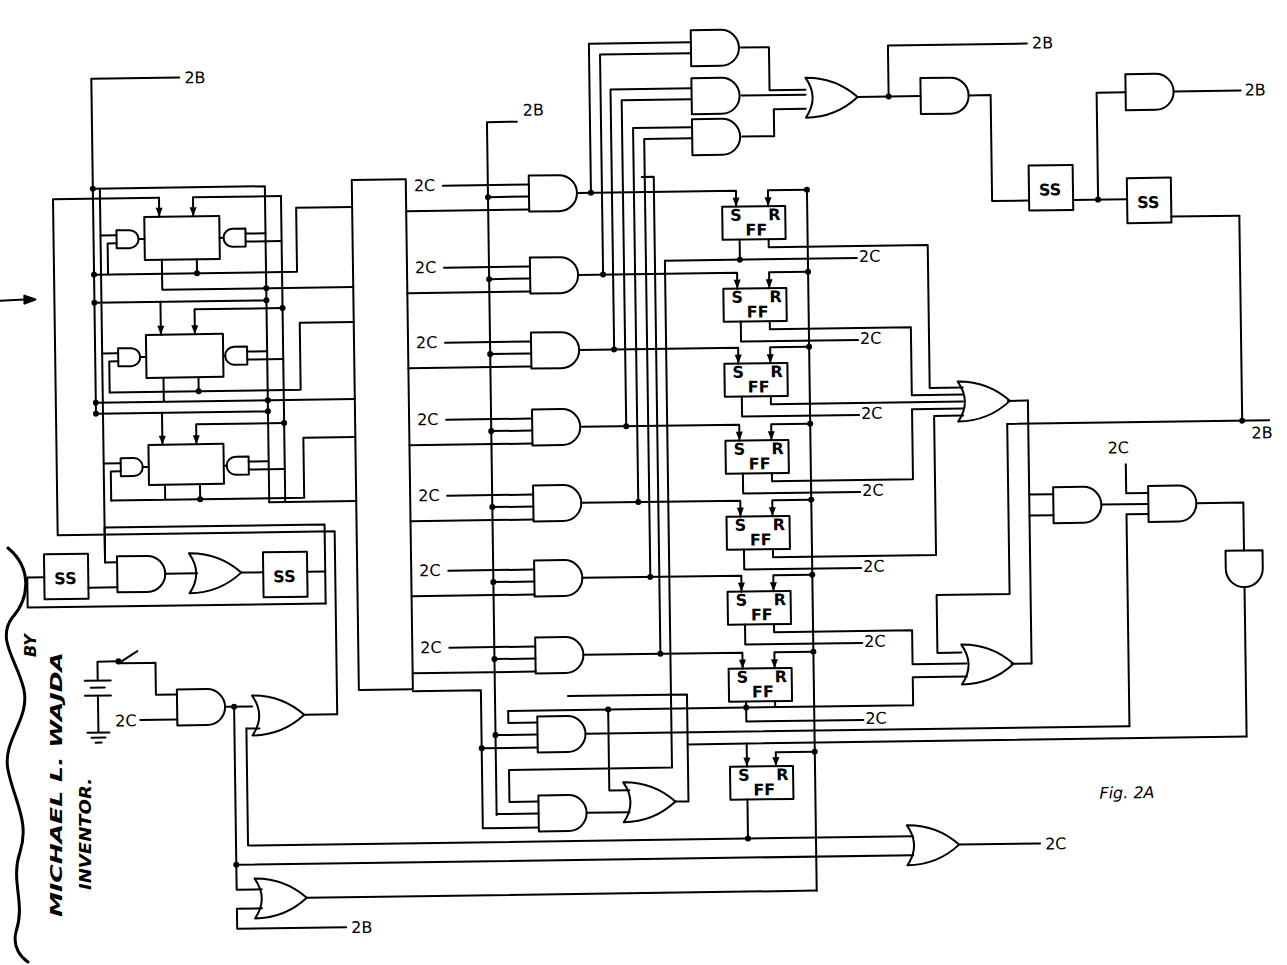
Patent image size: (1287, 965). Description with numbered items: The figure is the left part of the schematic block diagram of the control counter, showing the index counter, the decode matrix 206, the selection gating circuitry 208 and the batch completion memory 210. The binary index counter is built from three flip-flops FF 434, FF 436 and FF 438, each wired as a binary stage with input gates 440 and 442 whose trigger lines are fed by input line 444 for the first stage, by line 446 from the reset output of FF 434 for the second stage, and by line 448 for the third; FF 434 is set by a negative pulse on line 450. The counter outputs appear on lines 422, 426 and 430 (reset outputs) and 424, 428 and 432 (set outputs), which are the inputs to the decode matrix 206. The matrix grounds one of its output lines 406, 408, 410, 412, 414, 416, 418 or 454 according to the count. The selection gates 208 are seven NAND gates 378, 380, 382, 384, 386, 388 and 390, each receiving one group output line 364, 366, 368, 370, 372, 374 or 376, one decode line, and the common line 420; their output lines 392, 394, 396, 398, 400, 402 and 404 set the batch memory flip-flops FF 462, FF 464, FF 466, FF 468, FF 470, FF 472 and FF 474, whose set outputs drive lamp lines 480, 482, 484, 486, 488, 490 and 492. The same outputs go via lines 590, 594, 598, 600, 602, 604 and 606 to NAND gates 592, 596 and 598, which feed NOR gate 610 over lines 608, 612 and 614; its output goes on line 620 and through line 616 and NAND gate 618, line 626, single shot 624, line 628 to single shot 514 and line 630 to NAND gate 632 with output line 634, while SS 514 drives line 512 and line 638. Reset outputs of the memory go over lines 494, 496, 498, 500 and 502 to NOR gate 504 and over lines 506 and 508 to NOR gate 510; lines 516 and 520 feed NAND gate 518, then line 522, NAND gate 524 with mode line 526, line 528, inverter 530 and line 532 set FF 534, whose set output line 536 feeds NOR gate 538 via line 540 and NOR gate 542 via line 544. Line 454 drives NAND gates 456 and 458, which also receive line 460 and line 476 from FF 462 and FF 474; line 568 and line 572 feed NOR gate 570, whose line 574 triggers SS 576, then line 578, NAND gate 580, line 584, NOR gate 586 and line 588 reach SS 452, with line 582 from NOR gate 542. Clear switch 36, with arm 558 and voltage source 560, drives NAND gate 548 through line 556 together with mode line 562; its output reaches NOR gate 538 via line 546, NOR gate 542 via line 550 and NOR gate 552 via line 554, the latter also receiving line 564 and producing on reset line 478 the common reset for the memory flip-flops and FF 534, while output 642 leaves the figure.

The decode matrix 206 is at (370, 688).
The line 420 is at (492, 118).
The group 7 output line 376 is at (472, 183).
The group 6 output line 374 is at (472, 265).
The group 5 output line 372 is at (472, 340).
The group 4 output line 370 is at (472, 417).
The group 3 output line 368 is at (472, 493).
The group 2 output line 366 is at (472, 568).
The group 1 output line 364 is at (470, 645).
The decode matrix output line 418 is at (427, 208).
The decode matrix output line 416 is at (427, 290).
The decode matrix output line 414 is at (427, 365).
The decode matrix output line 412 is at (427, 442).
The decode matrix output line 410 is at (427, 518).
The decode matrix output line 408 is at (427, 593).
The decode matrix output line 406 is at (446, 670).
The NAND gate 390 is at (542, 212).
The NAND gate 388 is at (542, 292).
The NAND gate 386 is at (546, 368).
The NAND gate 384 is at (554, 444).
The NAND gate 382 is at (554, 522).
The NAND gate 380 is at (574, 572).
The NAND gate 378 is at (572, 646).
The output line 404 is at (582, 210).
The output line 402 is at (592, 290).
The output line 400 is at (597, 354).
The output line 398 is at (603, 430).
The output line 396 is at (611, 508).
The output line 394 is at (611, 582).
The output line 392 is at (593, 660).
The gating circuitry 208 is at (570, 214).
The batch completion memory 210 is at (757, 201).
The line 604 is at (614, 44).
The line 606 is at (672, 44).
The line 600 is at (652, 206).
The line 602 is at (658, 247).
The line 590 is at (656, 148).
The line 594 is at (668, 412).
The NAND gate 598 is at (748, 48).
The NAND gate 596 is at (760, 76).
The NAND gate 592 is at (738, 148).
The line 614 is at (775, 49).
The line 612 is at (777, 77).
The line 608 is at (778, 114).
The NOR gate 610 is at (833, 80).
The line 616 is at (874, 100).
The line 620 is at (968, 49).
The NAND gate 618 is at (966, 88).
The line 626 is at (996, 124).
The single shot multivibrator 624 is at (1056, 171).
The line 628 is at (1086, 208).
The line 630 is at (1102, 136).
The NAND gate 632 is at (1159, 82).
The line 634 is at (1212, 100).
The single shot multivibrator 514 is at (1153, 230).
The line 512 is at (1242, 294).
The line 638 is at (1252, 425).
The flip-flop 474 is at (726, 224).
The flip-flop 472 is at (726, 305).
The flip-flop 470 is at (726, 380).
The flip-flop 468 is at (726, 457).
The flip-flop 466 is at (726, 533).
The flip-flop 464 is at (726, 608).
The flip-flop 462 is at (726, 681).
The line 478 is at (811, 797).
The line 492 is at (830, 268).
The line 490 is at (834, 336).
The line 488 is at (836, 412).
The line 486 is at (834, 489).
The line 484 is at (836, 565).
The line 482 is at (840, 640).
The line 480 is at (830, 718).
The line 502 is at (940, 294).
The line 500 is at (882, 330).
The line 498 is at (878, 406).
The line 496 is at (876, 482).
The line 494 is at (896, 555).
The NOR gate 504 is at (990, 384).
The line 508 is at (878, 635).
The line 506 is at (938, 704).
The NOR gate 510 is at (991, 680).
The line 516 is at (1030, 446).
The line 520 is at (1030, 606).
The NAND gate 518 is at (1079, 522).
The line 522 is at (1106, 492).
The line 526 is at (1127, 478).
The NAND gate 524 is at (1171, 522).
The line 528 is at (1230, 500).
The NAND gate 530 is at (1226, 586).
The line 532 is at (1230, 614).
The line 574 is at (690, 762).
The decode matrix output line 454 is at (476, 760).
The NAND gate 456 is at (592, 742).
The NAND gate 458 is at (552, 796).
The line 568 is at (605, 720).
The line 476 is at (666, 756).
The NOR gate 570 is at (650, 822).
The line 572 is at (612, 814).
The line 460 is at (565, 695).
The flip-flop 534 is at (750, 815).
The set output line 536 is at (750, 832).
The line 540 is at (876, 836).
The NOR gate 538 is at (926, 832).
The line 642 is at (996, 858).
The line 544 is at (579, 782).
The line 546 is at (602, 864).
The line 554 is at (228, 858).
The NOR gate 552 is at (303, 884).
The line 564 is at (230, 906).
The input line 444 is at (107, 112).
The line 450 is at (57, 402).
The line 446 is at (97, 283).
The line 448 is at (132, 406).
The flip-flop 434 is at (148, 212).
The flip-flop 436 is at (178, 328).
The flip-flop 438 is at (178, 439).
The input gate 440 is at (134, 244).
The input gate 442 is at (232, 220).
The input line 422 is at (308, 212).
The input line 424 is at (258, 283).
The input line 426 is at (308, 314).
The input line 428 is at (224, 390).
The input line 430 is at (312, 436).
The input line 432 is at (324, 495).
The line 582 is at (94, 526).
The single shot multivibrator 576 is at (48, 553).
The NAND gate 580 is at (138, 549).
The line 578 is at (112, 598).
The NOR gate 586 is at (208, 549).
The line 584 is at (180, 572).
The output line 588 is at (246, 572).
The single shot multivibrator 452 is at (266, 548).
The clear switch 36 is at (111, 634).
The arm 558 is at (134, 640).
The D.C. voltage source 560 is at (92, 662).
The line 556 is at (154, 655).
The NAND gate 548 is at (200, 684).
The line 562 is at (159, 714).
The line 550 is at (242, 692).
The NOR gate 542 is at (272, 732).